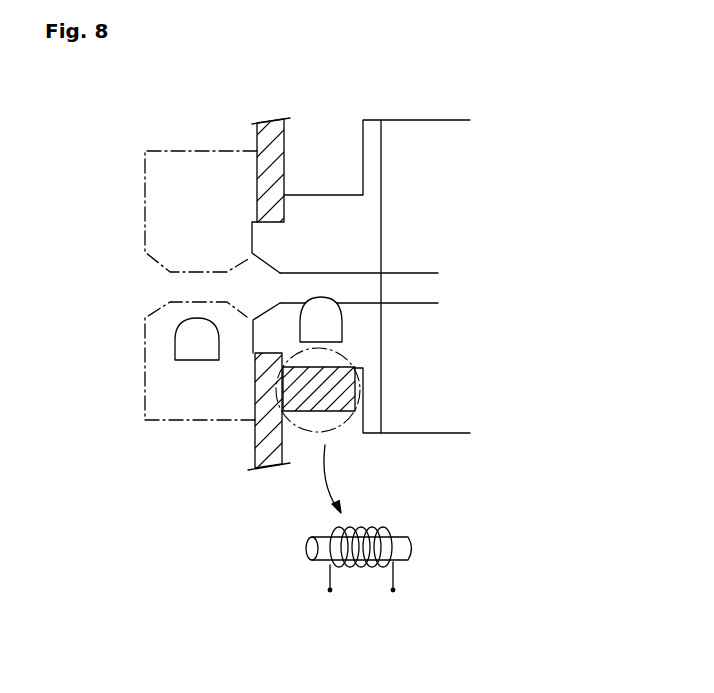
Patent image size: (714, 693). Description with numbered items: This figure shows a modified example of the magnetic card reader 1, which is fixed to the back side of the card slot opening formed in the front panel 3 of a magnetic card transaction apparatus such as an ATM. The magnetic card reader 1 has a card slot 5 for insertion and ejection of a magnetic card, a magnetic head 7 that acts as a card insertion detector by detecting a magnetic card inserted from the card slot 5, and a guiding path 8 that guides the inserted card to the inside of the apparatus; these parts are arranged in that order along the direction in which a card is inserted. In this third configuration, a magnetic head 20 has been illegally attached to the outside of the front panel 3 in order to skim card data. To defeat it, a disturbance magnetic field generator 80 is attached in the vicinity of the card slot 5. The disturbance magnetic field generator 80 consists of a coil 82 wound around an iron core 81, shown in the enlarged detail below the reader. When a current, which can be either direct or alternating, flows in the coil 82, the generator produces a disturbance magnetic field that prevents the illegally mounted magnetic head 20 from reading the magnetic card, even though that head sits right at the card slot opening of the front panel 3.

The magnetic card reader 1 is at (463, 120).
The front panel 3 is at (277, 120).
The card slot 5 is at (258, 282).
The magnetic head 7 is at (332, 323).
The guiding path 8 is at (334, 285).
The magnetic head 20 is at (181, 338).
The disturbance magnetic field generator 80 is at (436, 554).
The iron core 81 is at (402, 536).
The coil 82 is at (393, 582).